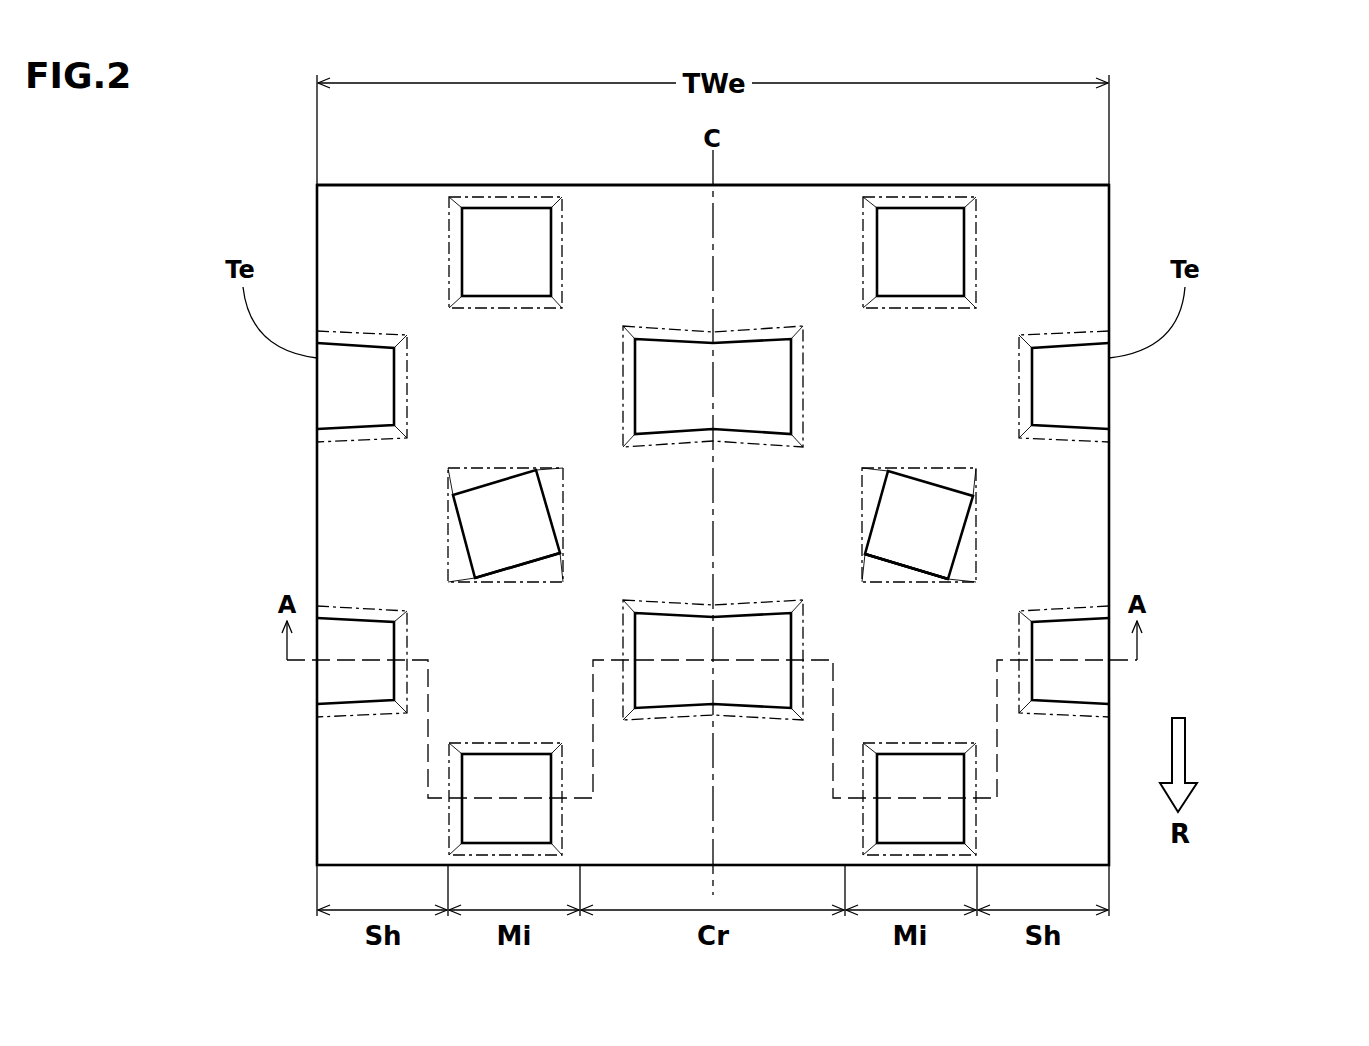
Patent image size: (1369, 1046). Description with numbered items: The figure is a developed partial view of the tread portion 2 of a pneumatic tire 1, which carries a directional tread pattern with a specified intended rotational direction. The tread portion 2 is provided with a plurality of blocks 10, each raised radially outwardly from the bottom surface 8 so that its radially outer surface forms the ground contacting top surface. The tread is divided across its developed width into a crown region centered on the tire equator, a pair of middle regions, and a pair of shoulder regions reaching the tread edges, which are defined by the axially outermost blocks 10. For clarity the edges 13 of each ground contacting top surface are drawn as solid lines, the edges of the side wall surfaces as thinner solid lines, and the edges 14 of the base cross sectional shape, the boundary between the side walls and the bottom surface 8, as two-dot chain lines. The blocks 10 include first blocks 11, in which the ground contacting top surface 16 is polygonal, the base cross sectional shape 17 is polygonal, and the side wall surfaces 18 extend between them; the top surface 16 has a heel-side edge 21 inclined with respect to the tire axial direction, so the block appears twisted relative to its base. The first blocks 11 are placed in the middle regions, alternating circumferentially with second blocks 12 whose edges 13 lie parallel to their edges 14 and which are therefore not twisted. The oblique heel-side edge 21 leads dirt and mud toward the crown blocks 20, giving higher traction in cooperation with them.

The pneumatic tire 1 is at (999, 184).
The tread portion 2 is at (746, 184).
The bottom surface 8 is at (608, 237).
The block 10 is at (760, 480).
The first block 11 is at (760, 507).
The second block 12 is at (591, 207).
The edges of the ground contacting top surface 13 is at (449, 243).
The edges of the base cross sectional shape 14 is at (449, 287).
The ground contacting top surface 16 is at (935, 514).
The base cross sectional shape 17 is at (977, 495).
The side wall surfaces 18 is at (967, 554).
The crown block 20 is at (670, 385).
The heel-side edge 21 is at (520, 568).